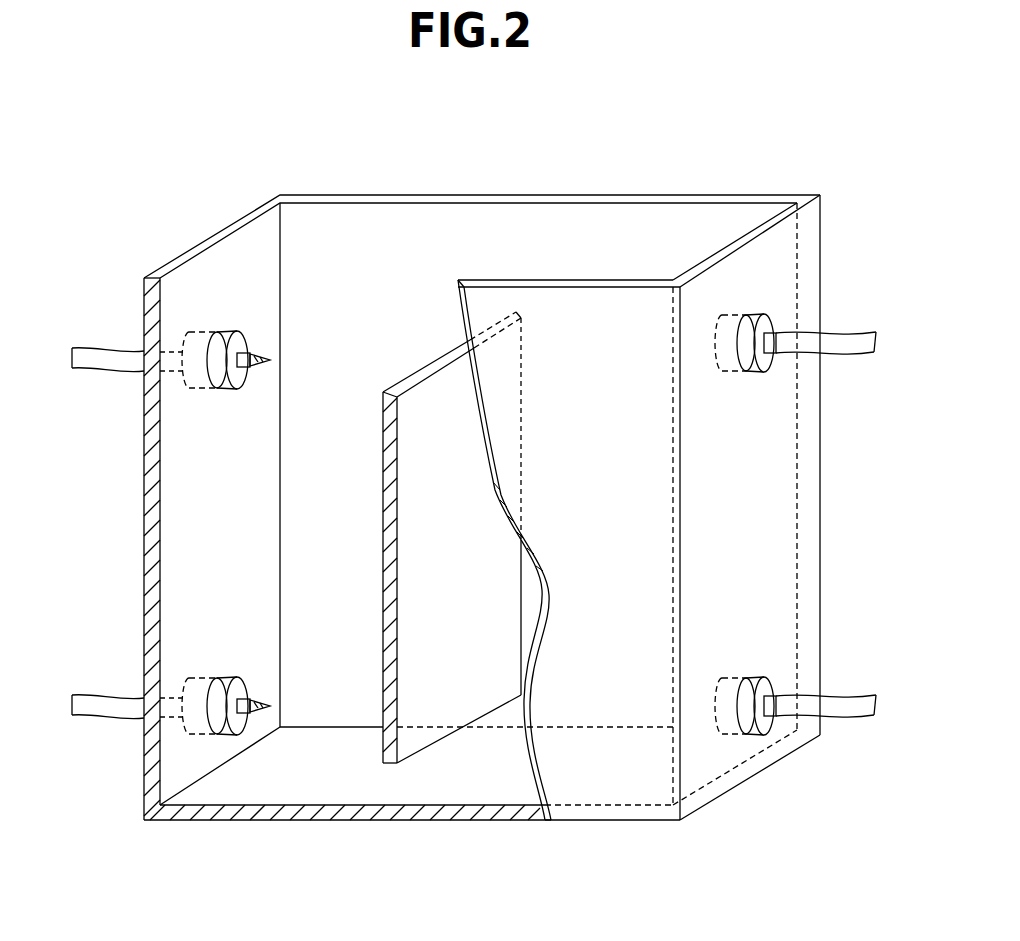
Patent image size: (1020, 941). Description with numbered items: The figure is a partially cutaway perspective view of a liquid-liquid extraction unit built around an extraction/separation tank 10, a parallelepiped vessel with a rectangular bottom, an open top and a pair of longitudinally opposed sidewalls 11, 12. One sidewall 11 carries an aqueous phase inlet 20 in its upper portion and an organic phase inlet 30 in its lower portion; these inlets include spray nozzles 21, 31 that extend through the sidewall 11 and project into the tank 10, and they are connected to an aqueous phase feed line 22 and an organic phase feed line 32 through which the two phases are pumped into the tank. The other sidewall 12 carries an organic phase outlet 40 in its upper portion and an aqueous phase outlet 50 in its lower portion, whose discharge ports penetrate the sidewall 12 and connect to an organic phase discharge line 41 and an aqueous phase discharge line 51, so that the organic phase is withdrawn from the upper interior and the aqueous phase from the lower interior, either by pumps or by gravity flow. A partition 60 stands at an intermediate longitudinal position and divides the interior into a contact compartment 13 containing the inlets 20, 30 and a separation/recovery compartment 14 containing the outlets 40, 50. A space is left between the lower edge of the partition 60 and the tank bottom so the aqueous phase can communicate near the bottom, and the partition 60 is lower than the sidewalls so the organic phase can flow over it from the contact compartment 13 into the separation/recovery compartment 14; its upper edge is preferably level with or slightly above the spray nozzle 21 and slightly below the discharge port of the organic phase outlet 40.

The extraction/separation tank 10 is at (490, 205).
The sidewall 11 is at (186, 596).
The sidewall 12 is at (742, 537).
The contact compartment 13 is at (335, 530).
The separation/recovery compartment 14 is at (528, 586).
The aqueous phase inlet 20 is at (189, 277).
The spray nozzle 21 is at (264, 352).
The aqueous phase feed line 22 is at (96, 350).
The organic phase inlet 30 is at (220, 784).
The spray nozzle 31 is at (251, 714).
The organic phase feed line 32 is at (99, 696).
The organic phase outlet 40 is at (766, 322).
The organic phase discharge line 41 is at (855, 355).
The aqueous phase outlet 50 is at (777, 737).
The aqueous phase discharge line 51 is at (845, 700).
The partition 60 is at (420, 700).